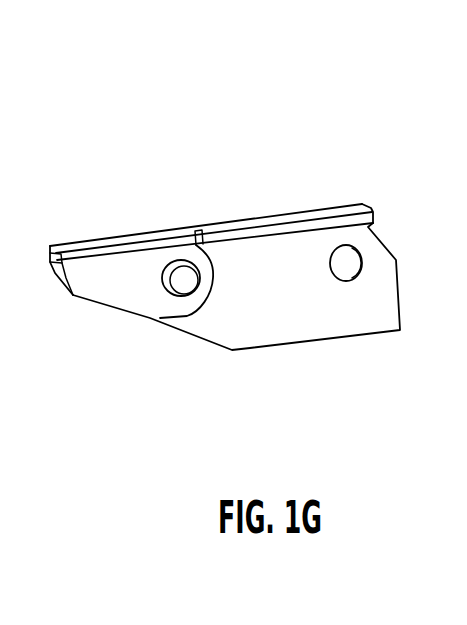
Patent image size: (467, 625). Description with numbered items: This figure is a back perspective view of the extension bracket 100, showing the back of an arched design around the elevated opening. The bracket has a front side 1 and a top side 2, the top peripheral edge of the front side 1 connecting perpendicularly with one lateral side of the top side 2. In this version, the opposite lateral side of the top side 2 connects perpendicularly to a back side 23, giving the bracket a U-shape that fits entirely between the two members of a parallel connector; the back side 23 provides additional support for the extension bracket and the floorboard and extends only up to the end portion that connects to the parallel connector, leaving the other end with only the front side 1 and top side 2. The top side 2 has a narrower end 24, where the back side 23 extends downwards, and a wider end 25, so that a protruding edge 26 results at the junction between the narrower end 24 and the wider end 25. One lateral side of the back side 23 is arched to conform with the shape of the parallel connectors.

The extension bracket 100 is at (308, 128).
The front side 1 is at (357, 323).
The top side 2 is at (253, 221).
The back side 23 is at (151, 303).
The narrower end 24 is at (103, 239).
The wider end 25 is at (343, 209).
The protruding edge 26 is at (196, 245).